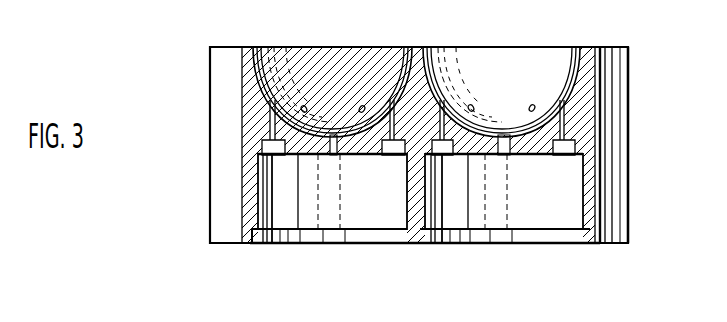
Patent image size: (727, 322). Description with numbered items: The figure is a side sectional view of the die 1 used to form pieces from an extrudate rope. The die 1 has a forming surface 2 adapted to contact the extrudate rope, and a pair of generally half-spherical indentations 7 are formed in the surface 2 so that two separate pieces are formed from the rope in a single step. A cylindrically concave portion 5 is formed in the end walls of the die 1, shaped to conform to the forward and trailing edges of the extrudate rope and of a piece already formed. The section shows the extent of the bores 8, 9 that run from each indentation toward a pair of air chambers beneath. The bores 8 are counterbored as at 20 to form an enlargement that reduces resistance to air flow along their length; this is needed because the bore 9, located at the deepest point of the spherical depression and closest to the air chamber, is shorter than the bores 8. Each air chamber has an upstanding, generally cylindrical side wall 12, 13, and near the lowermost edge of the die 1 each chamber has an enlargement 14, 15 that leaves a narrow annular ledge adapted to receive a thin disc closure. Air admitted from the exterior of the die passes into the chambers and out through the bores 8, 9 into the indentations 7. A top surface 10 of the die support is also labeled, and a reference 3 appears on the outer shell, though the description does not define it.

The die 1 is at (640, 50).
The forming surface 2 is at (248, 46).
The outer shell 3 is at (630, 230).
The cylindrically concave portion 5 is at (601, 182).
The half-spherical indentations 7 is at (318, 64).
The bores 8 is at (361, 103).
The bore 9 is at (336, 133).
The top surface 10 is at (580, 46).
The side wall 12 is at (403, 231).
The side wall 13 is at (583, 217).
The enlargement 14 is at (586, 245).
The enlargement 15 is at (409, 245).
The counterbore 20 is at (404, 156).